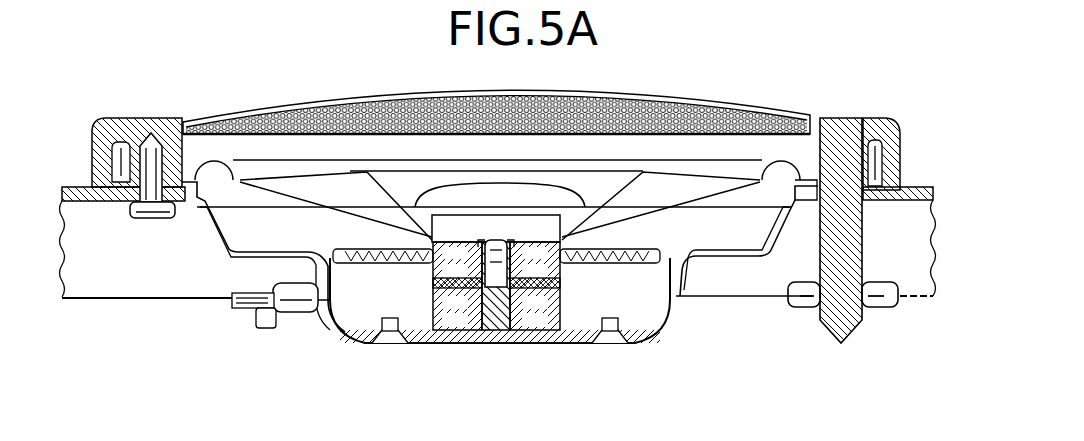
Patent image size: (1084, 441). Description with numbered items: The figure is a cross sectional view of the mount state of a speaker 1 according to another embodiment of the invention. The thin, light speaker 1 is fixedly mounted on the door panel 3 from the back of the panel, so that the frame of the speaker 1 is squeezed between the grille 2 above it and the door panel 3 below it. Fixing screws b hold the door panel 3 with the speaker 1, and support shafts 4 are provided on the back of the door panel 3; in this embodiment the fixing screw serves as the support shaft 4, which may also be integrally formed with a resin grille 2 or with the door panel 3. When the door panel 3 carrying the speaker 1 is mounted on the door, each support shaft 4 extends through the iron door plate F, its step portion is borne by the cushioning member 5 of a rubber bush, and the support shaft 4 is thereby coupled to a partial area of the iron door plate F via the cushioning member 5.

The speaker 1 is at (742, 228).
The grille 2 is at (522, 142).
The door panel 3 is at (906, 188).
The support shaft 4 is at (848, 236).
The cushioning member 5 is at (884, 306).
The fixing screw b is at (166, 222).
The iron door plate F is at (110, 302).